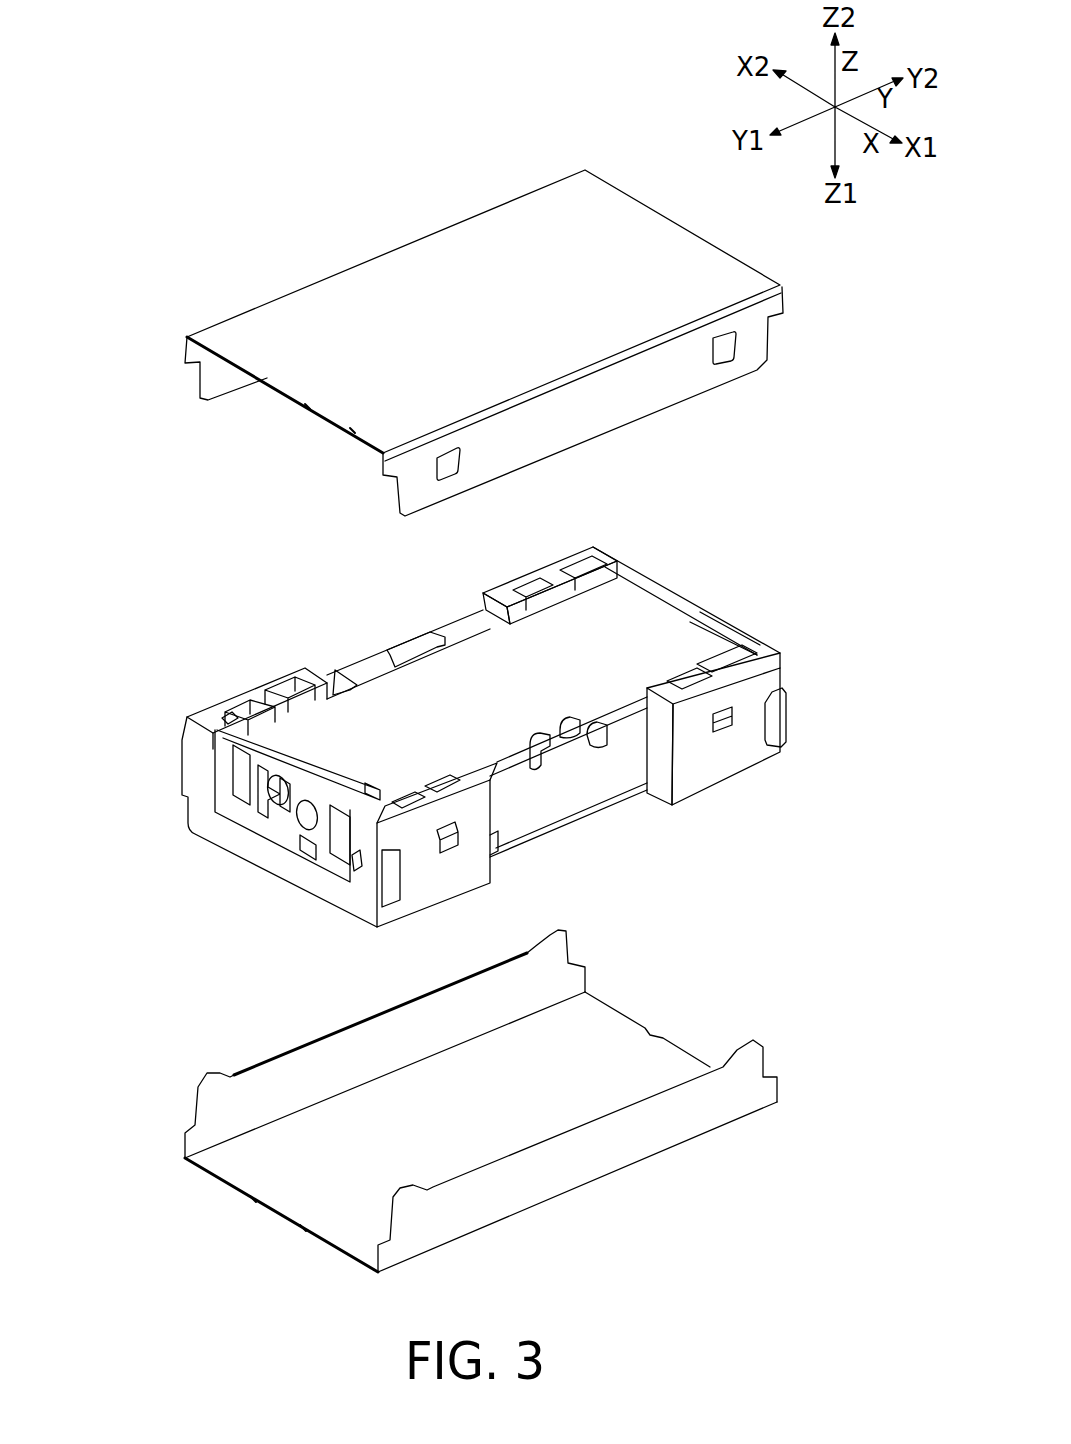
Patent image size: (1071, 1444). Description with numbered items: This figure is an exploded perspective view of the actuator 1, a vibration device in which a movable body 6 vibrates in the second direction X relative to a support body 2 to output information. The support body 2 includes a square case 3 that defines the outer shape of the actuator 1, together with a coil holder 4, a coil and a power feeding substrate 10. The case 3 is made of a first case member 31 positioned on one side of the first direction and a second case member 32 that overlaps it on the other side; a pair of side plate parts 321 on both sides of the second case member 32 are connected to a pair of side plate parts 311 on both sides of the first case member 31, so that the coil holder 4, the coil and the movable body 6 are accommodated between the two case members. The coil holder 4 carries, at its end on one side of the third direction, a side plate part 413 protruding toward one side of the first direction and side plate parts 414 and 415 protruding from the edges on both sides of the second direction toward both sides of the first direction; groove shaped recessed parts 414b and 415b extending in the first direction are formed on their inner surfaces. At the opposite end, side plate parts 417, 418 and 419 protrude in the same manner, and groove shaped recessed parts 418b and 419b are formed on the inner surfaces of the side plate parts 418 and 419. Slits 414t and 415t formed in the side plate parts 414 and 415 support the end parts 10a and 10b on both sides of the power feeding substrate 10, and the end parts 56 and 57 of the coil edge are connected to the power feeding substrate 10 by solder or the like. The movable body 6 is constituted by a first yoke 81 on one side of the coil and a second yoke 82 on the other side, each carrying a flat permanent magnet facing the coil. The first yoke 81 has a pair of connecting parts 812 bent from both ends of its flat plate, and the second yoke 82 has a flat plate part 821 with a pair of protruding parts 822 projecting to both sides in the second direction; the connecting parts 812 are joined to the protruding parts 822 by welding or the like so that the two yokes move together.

The actuator 1 is at (128, 198).
The support body 2 is at (410, 721).
The case 3 is at (410, 721).
The first case member 31 is at (407, 1101).
The side plate parts 311 is at (278, 1053).
The second case member 32 is at (410, 354).
The side plate parts 321 is at (215, 372).
The coil holder 4 is at (479, 734).
The movable body 6 is at (635, 617).
The power feeding substrate 10 is at (242, 830).
The end part 10a is at (310, 835).
The end part 10b is at (185, 728).
The side plate part 413 is at (268, 860).
The side plate part 414 is at (392, 839).
The groove shaped recessed part 414b is at (445, 780).
The slit 414t is at (355, 860).
The side plate part 415 is at (281, 687).
The groove shaped recessed part 415b is at (300, 695).
The slit 415t is at (232, 718).
The side plate part 417 is at (735, 632).
The side plate part 418 is at (748, 714).
The groove shaped recessed part 418b is at (680, 671).
The side plate part 419 is at (552, 588).
The groove shaped recessed part 419b is at (585, 588).
The end part of coil edge 56 is at (302, 812).
The end part of coil edge 57 is at (272, 803).
The first yoke 81 is at (572, 797).
The connecting parts 812 is at (538, 800).
The second yoke 82 is at (591, 593).
The flat plate part 821 is at (428, 650).
The protruding parts 822 is at (620, 720).